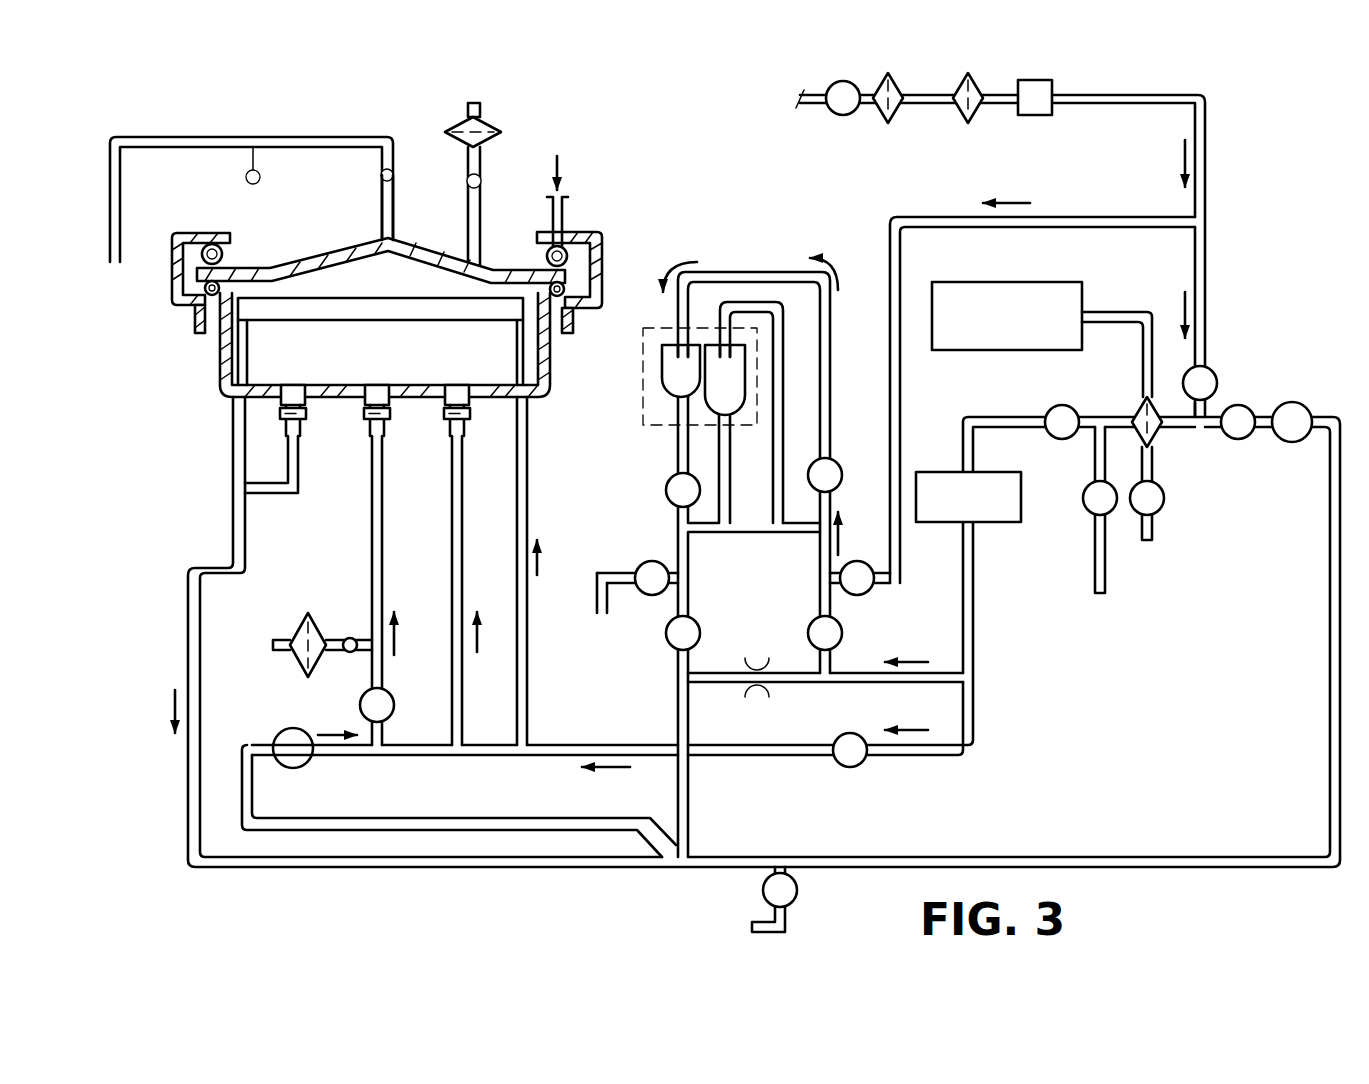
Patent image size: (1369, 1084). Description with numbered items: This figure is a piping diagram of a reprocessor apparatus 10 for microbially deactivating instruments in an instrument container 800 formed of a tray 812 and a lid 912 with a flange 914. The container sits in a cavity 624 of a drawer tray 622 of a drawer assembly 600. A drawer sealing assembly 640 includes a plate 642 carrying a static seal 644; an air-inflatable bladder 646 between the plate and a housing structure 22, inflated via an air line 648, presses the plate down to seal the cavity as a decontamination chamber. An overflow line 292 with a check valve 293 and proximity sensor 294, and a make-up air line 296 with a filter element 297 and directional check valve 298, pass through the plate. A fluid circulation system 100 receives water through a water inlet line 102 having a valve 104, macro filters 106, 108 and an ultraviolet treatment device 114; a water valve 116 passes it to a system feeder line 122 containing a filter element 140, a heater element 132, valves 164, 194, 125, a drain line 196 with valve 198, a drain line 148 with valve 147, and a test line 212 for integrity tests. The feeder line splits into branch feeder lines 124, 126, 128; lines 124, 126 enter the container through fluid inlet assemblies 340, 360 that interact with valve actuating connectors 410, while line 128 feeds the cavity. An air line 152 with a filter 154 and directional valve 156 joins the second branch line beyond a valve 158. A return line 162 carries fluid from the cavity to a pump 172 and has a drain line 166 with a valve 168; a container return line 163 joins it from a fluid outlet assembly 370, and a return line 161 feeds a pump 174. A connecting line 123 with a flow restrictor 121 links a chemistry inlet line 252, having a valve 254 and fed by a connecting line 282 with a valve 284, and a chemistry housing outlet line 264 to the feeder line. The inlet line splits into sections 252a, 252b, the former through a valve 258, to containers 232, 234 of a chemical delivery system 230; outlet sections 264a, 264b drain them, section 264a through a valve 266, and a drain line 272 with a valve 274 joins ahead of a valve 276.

The reprocessor apparatus 10 is at (627, 118).
The housing structure 22 is at (200, 233).
The fluid circulation system 100 is at (1207, 140).
The water inlet line 102 is at (806, 105).
The valve 104 is at (842, 116).
The macro filter 106 is at (890, 122).
The macro filter 108 is at (970, 122).
The ultraviolet treatment device 114 is at (1052, 86).
The water valve 116 is at (1215, 374).
The flow restrictor 121 is at (755, 694).
The system feeder line 122 is at (492, 755).
The connecting line 123 is at (872, 683).
The first branch feeder line 124 is at (450, 505).
The valve 125 is at (858, 762).
The second branch feeder line 126 is at (370, 510).
The third branch feeder line 128 is at (530, 504).
The heater element 132 is at (1003, 523).
The filter element 140 is at (1138, 410).
The valve 147 is at (1165, 498).
The drain line 148 is at (1153, 523).
The air line 152 is at (335, 655).
The filter 154 is at (297, 624).
The directional valve 156 is at (344, 637).
The valve 158 is at (393, 700).
The return line 161 is at (373, 818).
The return line 162 is at (232, 430).
The container return line 163 is at (265, 494).
The valve 164 is at (1246, 436).
The drain line 166 is at (793, 873).
The valve 168 is at (762, 888).
The pump 172 is at (1304, 408).
The pump 174 is at (302, 770).
The valve 194 is at (1050, 410).
The drain line 196 is at (1106, 586).
The valve 198 is at (1086, 502).
The test line 212 is at (1110, 308).
The chemical delivery system 230 is at (704, 316).
The container 232 is at (670, 388).
The container 234 is at (733, 372).
The chemistry inlet line 252 is at (819, 603).
The section of chemistry inlet line 252a is at (852, 333).
The section of chemistry inlet line 252b is at (784, 432).
The valve 254 is at (845, 633).
The valve 258 is at (834, 461).
The chemistry housing outlet line 264 is at (689, 553).
The first section of chemistry housing outlet line 264a is at (676, 442).
The second section of chemistry housing outlet line 264b is at (731, 497).
The valve 266 is at (667, 500).
The drain line 272 is at (595, 590).
The valve 274 is at (637, 570).
The valve 276 is at (669, 642).
The connecting line 282 is at (898, 545).
The valve 284 is at (864, 592).
The overflow line 292 is at (207, 135).
The check valve 293 is at (380, 173).
The proximity sensor 294 is at (262, 170).
The make-up air line 296 is at (468, 160).
The filter element 297 is at (487, 121).
The directional check valve 298 is at (481, 184).
The first fluid inlet assembly 340 is at (461, 384).
The second fluid inlet assembly 360 is at (379, 384).
The fluid outlet assembly 370 is at (295, 384).
The valve actuating connector 410 is at (306, 428).
The drawer assembly 600 is at (213, 363).
The drawer tray 622 is at (553, 368).
The cavity 624 is at (533, 346).
The drawer sealing assembly 640 is at (600, 243).
The plate 642 is at (337, 257).
The static seal 644 is at (560, 296).
The air-inflatable bladder 646 is at (561, 243).
The air line 648 is at (565, 208).
The instrument container 800 is at (413, 290).
The tray 812 is at (253, 345).
The lid 912 is at (305, 300).
The flange 914 is at (247, 308).